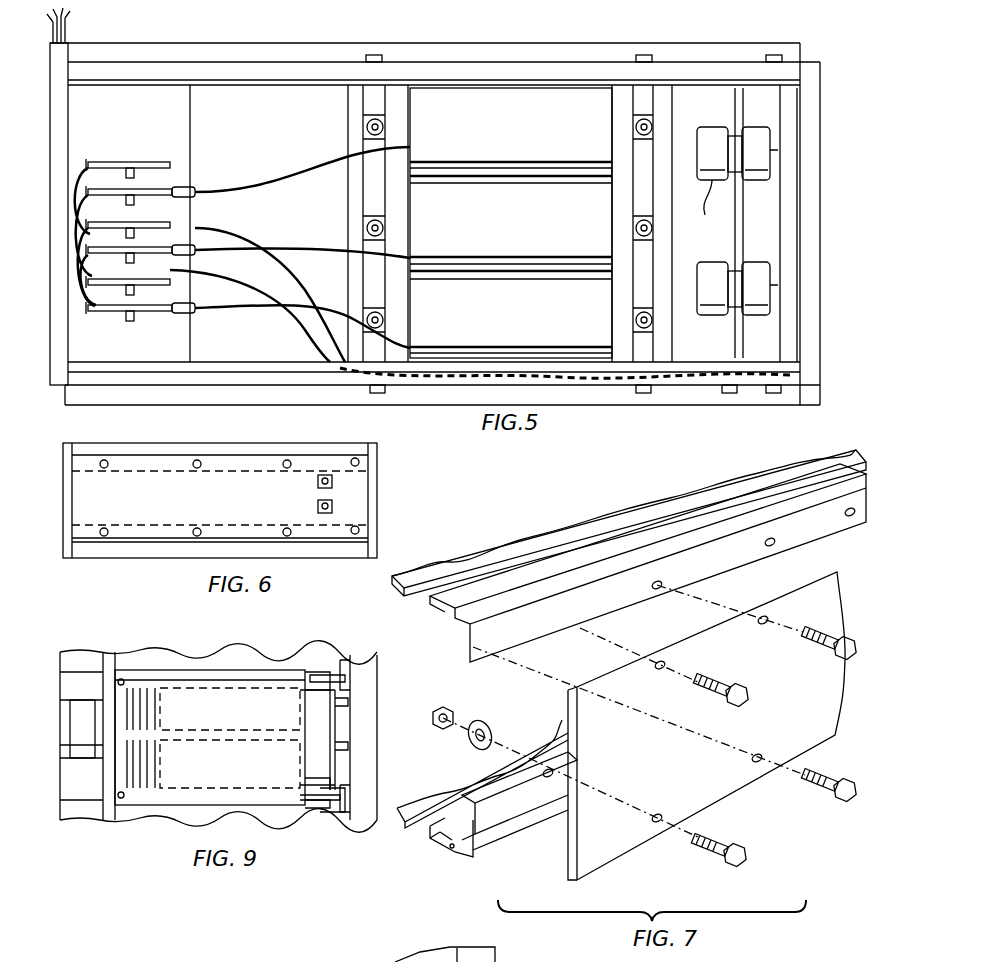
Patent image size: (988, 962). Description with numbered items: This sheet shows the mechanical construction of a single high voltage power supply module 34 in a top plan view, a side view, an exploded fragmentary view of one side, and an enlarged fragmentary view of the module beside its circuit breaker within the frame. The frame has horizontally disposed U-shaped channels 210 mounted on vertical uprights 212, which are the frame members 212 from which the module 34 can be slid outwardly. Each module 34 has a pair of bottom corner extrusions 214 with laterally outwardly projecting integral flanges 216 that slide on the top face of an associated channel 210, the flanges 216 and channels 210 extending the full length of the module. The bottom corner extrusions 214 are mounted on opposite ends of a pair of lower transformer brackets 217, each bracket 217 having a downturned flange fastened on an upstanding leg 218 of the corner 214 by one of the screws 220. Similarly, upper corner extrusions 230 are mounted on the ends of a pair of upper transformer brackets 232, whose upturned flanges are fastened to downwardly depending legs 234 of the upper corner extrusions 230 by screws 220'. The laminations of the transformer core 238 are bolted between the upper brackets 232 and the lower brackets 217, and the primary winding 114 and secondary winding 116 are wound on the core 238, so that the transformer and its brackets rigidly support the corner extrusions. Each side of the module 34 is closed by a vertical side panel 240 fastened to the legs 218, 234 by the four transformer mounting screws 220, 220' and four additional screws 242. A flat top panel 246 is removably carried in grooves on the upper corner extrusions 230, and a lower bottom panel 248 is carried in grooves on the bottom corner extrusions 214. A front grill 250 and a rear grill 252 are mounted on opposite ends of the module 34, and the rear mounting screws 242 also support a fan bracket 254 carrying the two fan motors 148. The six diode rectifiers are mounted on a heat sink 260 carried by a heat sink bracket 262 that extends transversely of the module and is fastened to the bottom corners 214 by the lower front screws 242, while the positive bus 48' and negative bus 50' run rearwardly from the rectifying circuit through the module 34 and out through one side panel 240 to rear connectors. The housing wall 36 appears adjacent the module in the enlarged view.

In FIG. 5, the module 34 is at (62, 414).
In FIG. 9, the module 34 is at (142, 810).
In FIG. 9, the housing wall 36 is at (70, 718).
In FIG. 5, the positive bus 48' is at (270, 285).
In FIG. 9, the positive bus 48' is at (382, 692).
In FIG. 5, the negative bus 50' is at (250, 307).
In FIG. 9, the negative bus 50' is at (382, 747).
In FIG. 5, the transformer primary winding 114 is at (535, 262).
In FIG. 5, the transformer secondary winding 116 is at (573, 347).
In FIG. 5, the fan motors 148 is at (702, 190).
In FIG. 9, the U-shaped channels 210 is at (102, 815).
In FIG. 9, the vertical uprights 212 is at (355, 728).
In FIG. 7, the bottom corner extrusions 214 is at (478, 852).
In FIG. 9, the bottom corner extrusions 214 is at (325, 805).
In FIG. 7, the flanges 216 is at (530, 805).
In FIG. 9, the lower transformer brackets 217 is at (312, 785).
In FIG. 7, the upstanding leg 218 is at (438, 840).
In FIG. 6, the screws 220 is at (273, 532).
In FIG. 7, the screws 220 is at (830, 800).
In FIG. 5, the screws 220' is at (560, 225).
In FIG. 6, the screws 220' is at (242, 440).
In FIG. 7, the screws 220' is at (833, 597).
In FIG. 7, the upper corner extrusions 230 is at (525, 568).
In FIG. 9, the upper corner extrusions 230 is at (325, 670).
In FIG. 5, the upper transformer brackets 232 is at (366, 105).
In FIG. 9, the upper transformer brackets 232 is at (320, 672).
In FIG. 7, the downwardly depending legs 234 is at (462, 656).
In FIG. 5, the core 238 is at (348, 143).
In FIG. 6, the vertical side panel 240 is at (138, 537).
In FIG. 7, the vertical side panel 240 is at (605, 868).
In FIG. 6, the screws 242 is at (107, 461).
In FIG. 7, the screws 242 is at (748, 862).
In FIG. 7, the flat top panel 246 is at (800, 450).
In FIG. 9, the flat top panel 246 is at (315, 675).
In FIG. 7, the lower bottom panel 248 is at (535, 730).
In FIG. 9, the lower bottom panel 248 is at (318, 800).
In FIG. 5, the front grill 250 is at (50, 300).
In FIG. 9, the front grill 250 is at (145, 685).
In FIG. 5, the rear grill 252 is at (808, 322).
In FIG. 5, the fan bracket 254 is at (795, 200).
In FIG. 5, the heat sink 260 is at (160, 162).
In FIG. 5, the heat sink bracket 262 is at (200, 130).
In FIG. 9, the heat sink bracket 262 is at (318, 808).